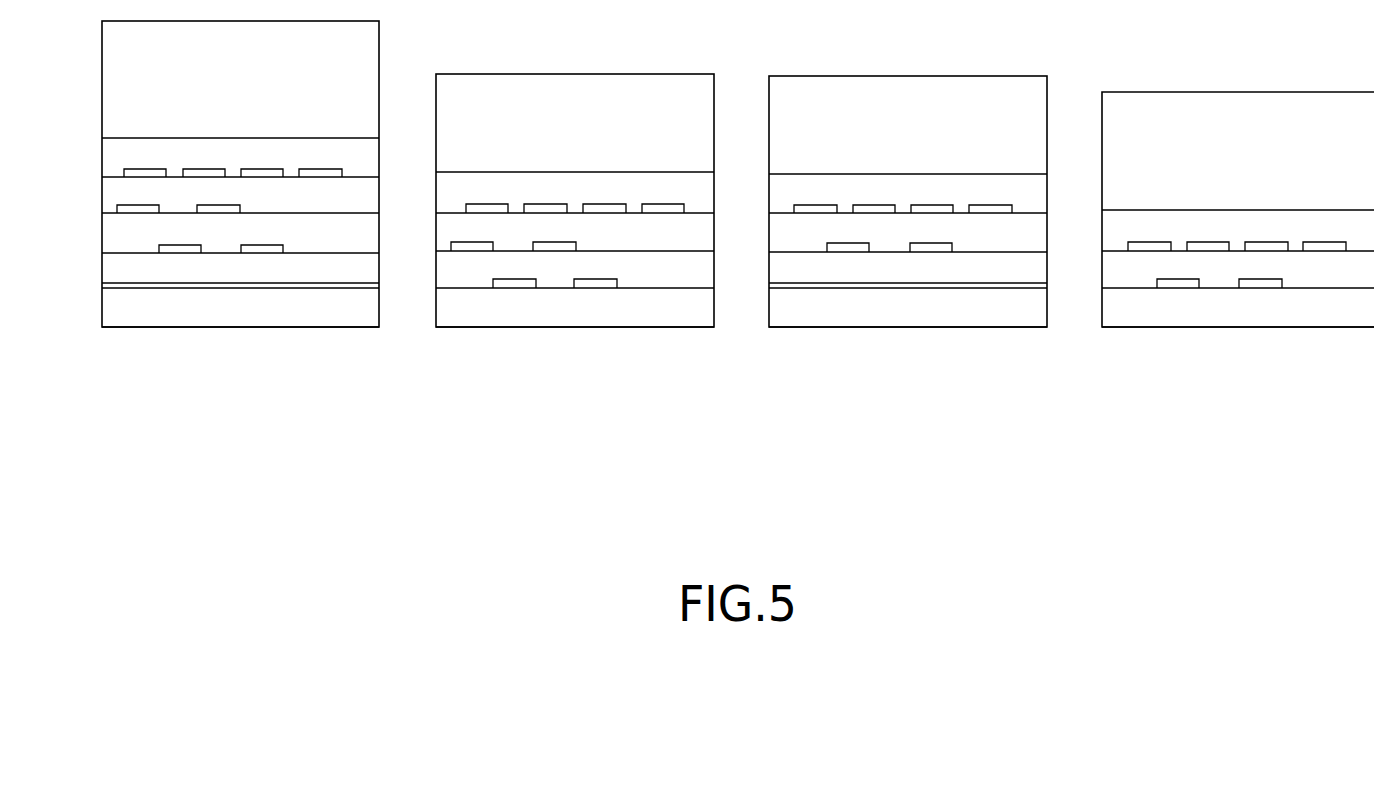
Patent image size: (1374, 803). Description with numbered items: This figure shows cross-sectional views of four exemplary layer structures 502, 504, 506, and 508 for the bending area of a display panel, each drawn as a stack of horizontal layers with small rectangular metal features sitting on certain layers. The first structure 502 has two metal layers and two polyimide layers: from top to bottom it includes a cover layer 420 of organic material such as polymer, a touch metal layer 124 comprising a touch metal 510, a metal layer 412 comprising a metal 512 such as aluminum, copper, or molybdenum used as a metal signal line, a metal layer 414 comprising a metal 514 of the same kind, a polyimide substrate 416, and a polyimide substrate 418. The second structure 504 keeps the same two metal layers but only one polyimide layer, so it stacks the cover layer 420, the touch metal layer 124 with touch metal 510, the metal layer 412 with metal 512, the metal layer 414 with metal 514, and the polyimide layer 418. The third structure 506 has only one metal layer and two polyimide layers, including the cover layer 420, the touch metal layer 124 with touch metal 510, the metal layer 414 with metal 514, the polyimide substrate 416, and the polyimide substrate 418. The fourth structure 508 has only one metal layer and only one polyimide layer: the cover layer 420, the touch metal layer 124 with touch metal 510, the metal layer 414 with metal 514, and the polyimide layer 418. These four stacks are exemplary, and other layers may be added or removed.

The structure 502 is at (227, 365).
The structure 504 is at (567, 370).
The structure 506 is at (903, 365).
The structure 508 is at (1238, 365).
The cover layer 420 is at (365, 80).
The touch metal layer 124 is at (367, 165).
The metal layer 412 is at (367, 203).
The metal layer 414 is at (367, 242).
The polyimide substrate 416 is at (367, 278).
The polyimide substrate 418 is at (367, 318).
The touch metal 510 is at (124, 173).
The metal 512 is at (125, 210).
The metal 514 is at (167, 245).